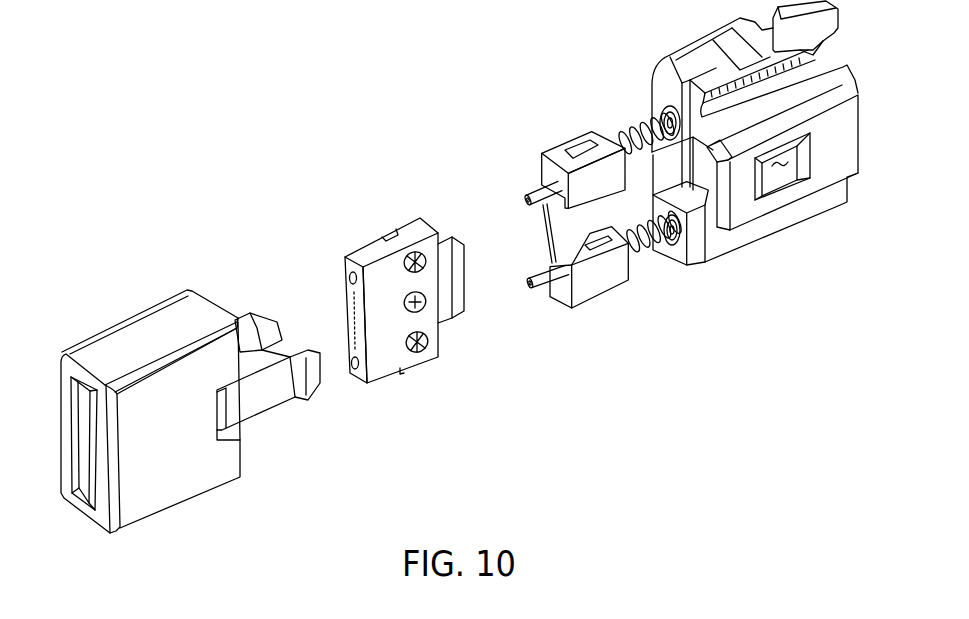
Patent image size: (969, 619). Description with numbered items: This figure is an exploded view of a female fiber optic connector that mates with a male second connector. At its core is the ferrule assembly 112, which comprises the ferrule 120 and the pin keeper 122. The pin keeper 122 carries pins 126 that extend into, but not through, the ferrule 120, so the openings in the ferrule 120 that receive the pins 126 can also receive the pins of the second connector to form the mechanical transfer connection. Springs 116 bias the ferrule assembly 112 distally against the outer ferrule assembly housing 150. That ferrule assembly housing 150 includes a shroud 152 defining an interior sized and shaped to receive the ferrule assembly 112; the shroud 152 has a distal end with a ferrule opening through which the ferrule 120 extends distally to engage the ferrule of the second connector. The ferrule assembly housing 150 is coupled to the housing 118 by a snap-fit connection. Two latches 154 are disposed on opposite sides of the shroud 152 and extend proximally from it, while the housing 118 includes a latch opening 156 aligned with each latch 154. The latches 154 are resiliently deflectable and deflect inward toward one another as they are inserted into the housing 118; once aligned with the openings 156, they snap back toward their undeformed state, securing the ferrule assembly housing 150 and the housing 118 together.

The ferrule assembly 112 is at (460, 133).
The springs 116 is at (626, 118).
The housing 118 is at (790, 235).
The ferrule 120 is at (414, 373).
The pin keeper 122 is at (604, 299).
The pins 126 is at (533, 203).
The ferrule assembly housing 150 is at (80, 290).
The shroud 152 is at (152, 328).
The latches 154 is at (290, 350).
The latch opening 156 is at (787, 163).